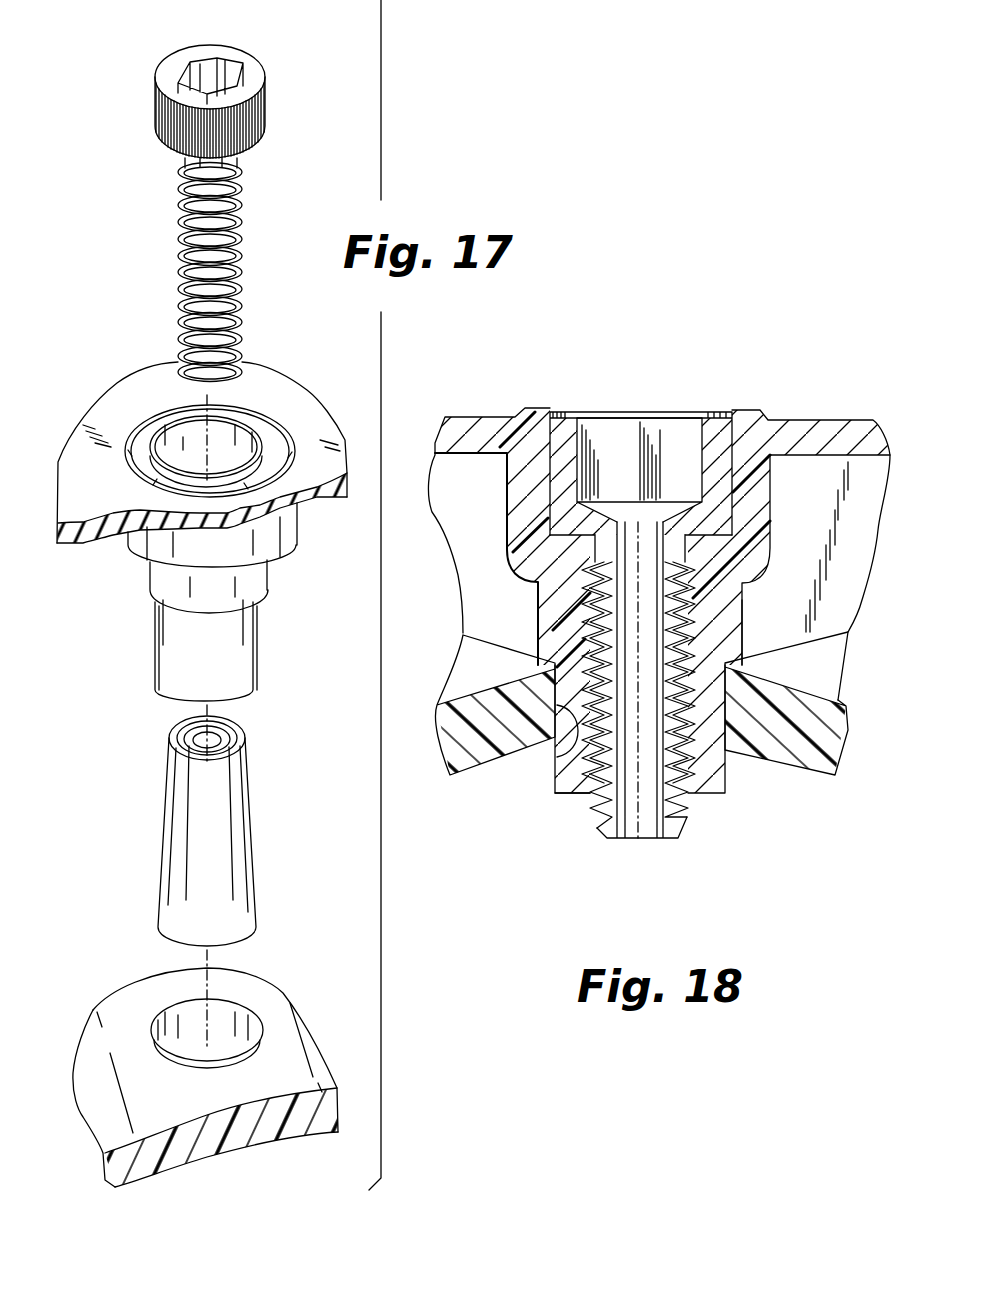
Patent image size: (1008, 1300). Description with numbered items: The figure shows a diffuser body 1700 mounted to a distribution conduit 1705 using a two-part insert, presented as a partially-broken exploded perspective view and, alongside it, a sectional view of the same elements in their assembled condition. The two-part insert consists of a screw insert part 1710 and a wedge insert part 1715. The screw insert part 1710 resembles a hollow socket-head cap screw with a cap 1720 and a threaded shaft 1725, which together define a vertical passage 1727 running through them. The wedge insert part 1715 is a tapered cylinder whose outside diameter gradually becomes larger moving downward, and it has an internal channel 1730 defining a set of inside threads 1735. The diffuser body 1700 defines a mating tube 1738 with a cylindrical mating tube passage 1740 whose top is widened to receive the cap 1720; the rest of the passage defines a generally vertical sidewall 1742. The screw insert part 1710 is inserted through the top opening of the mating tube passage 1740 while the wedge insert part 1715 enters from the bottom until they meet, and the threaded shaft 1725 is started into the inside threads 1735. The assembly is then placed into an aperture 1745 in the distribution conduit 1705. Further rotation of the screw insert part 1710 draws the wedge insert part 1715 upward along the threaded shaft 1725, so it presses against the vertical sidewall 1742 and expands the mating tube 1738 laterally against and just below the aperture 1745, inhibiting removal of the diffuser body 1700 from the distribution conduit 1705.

In FIG. 17, the diffuser body 1700 is at (97, 388).
In FIG. 18, the diffuser body 1700 is at (786, 390).
In FIG. 17, the distribution conduit 1705 is at (284, 969).
In FIG. 18, the distribution conduit 1705 is at (819, 676).
In FIG. 17, the screw insert part 1710 is at (138, 168).
In FIG. 18, the screw insert part 1710 is at (609, 387).
In FIG. 17, the wedge insert part 1715 is at (141, 830).
In FIG. 18, the wedge insert part 1715 is at (710, 768).
In FIG. 17, the cap 1720 is at (265, 98).
In FIG. 18, the cap 1720 is at (563, 458).
In FIG. 17, the threaded shaft 1725 is at (178, 267).
In FIG. 18, the threaded shaft 1725 is at (689, 829).
In FIG. 17, the vertical passage 1727 is at (203, 74).
In FIG. 18, the vertical passage 1727 is at (646, 828).
In FIG. 17, the internal channel 1730 is at (186, 729).
In FIG. 17, the inside threads 1735 is at (225, 725).
In FIG. 18, the inside threads 1735 is at (587, 600).
In FIG. 17, the mating tube 1738 is at (124, 591).
In FIG. 18, the mating tube 1738 is at (755, 641).
In FIG. 17, the mating tube passage 1740 is at (238, 436).
In FIG. 18, the mating tube passage 1740 is at (690, 625).
In FIG. 18, the vertical sidewall 1742 is at (590, 793).
In FIG. 17, the aperture 1745 is at (160, 1020).
In FIG. 18, the aperture 1745 is at (587, 767).